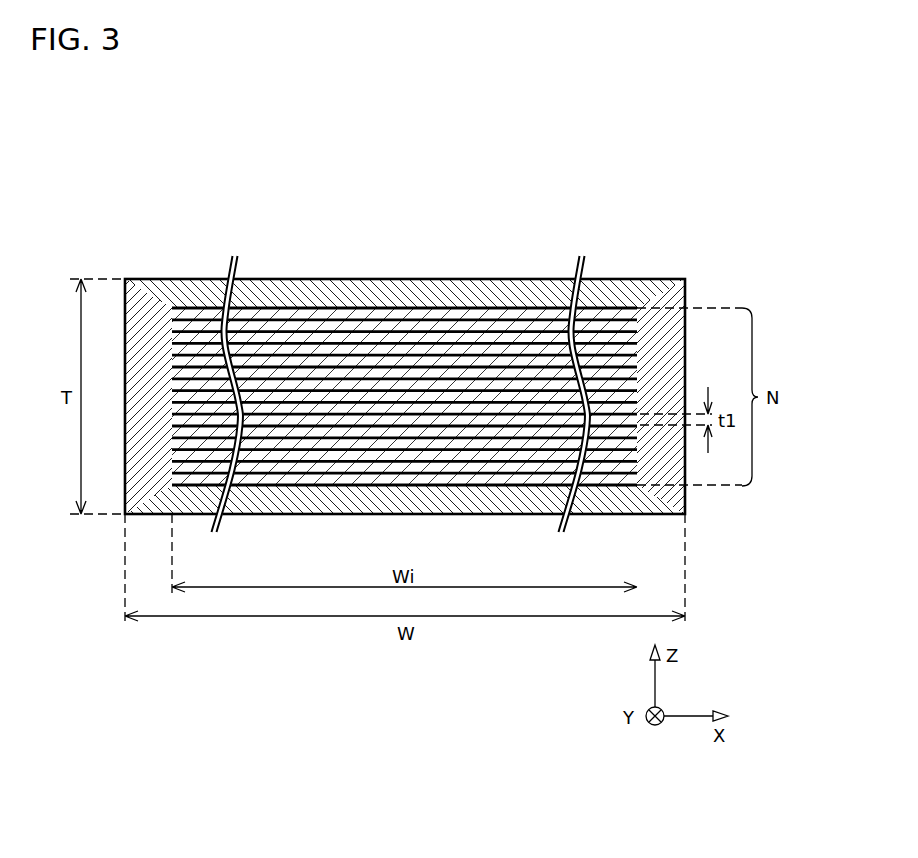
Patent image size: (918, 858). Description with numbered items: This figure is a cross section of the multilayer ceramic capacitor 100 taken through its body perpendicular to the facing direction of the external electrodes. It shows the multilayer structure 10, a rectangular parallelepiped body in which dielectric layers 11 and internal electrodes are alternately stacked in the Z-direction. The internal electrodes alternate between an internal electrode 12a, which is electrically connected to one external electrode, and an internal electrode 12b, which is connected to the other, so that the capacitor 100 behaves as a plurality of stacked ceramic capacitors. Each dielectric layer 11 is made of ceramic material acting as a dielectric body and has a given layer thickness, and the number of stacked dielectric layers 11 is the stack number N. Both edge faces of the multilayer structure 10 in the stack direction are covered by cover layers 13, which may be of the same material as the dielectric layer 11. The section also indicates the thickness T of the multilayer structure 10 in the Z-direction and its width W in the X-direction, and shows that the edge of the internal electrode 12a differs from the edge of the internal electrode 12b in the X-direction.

The multilayer ceramic capacitor 100 is at (427, 351).
The multilayer structure 10 is at (405, 381).
The dielectric layer 11 is at (540, 327).
The internal electrode 12a is at (297, 332).
The internal electrode 12b is at (375, 343).
The cover layer 13 is at (447, 293).